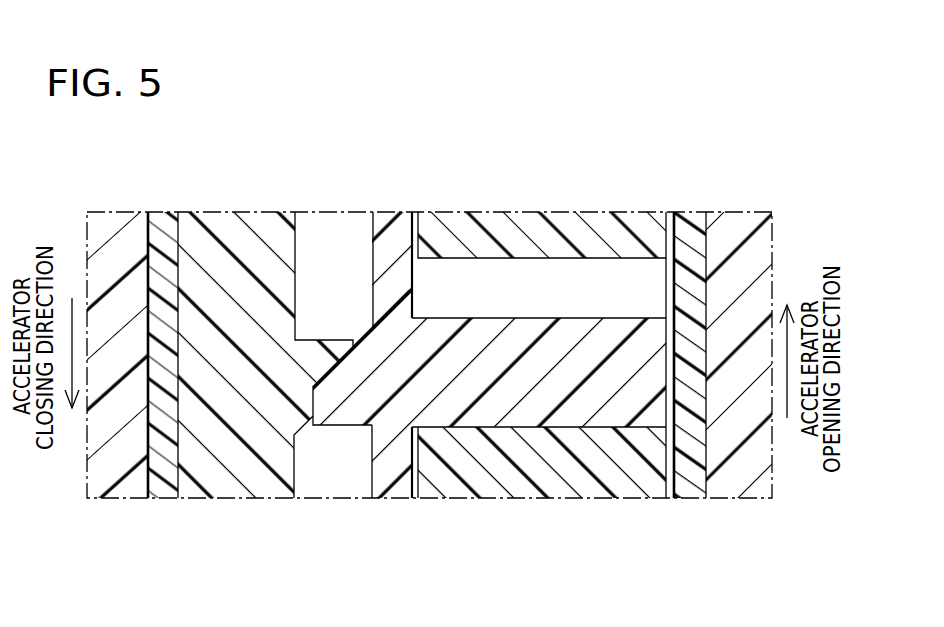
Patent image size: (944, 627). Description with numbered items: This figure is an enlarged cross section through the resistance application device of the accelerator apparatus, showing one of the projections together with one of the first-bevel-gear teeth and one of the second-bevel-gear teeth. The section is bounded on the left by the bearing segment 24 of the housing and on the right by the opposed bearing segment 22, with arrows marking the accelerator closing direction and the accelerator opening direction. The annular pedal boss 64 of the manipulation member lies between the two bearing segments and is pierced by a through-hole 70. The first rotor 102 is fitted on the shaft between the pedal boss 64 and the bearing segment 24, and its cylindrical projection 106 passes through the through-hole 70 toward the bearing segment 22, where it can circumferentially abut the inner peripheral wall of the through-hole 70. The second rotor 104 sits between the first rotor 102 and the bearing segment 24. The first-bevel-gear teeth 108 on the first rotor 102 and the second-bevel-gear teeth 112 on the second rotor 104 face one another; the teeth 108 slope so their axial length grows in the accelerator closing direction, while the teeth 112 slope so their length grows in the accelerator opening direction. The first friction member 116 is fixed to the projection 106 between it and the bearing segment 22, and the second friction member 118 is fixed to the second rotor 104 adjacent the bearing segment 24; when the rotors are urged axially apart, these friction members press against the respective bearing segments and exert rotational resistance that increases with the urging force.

The bearing segment 22 is at (736, 225).
The bearing segment 24 is at (112, 222).
The pedal boss 64 is at (556, 488).
The through-hole 70 is at (494, 258).
The first rotor 102 is at (400, 488).
The second rotor 104 is at (230, 488).
The projection 106 is at (570, 375).
The first-bevel-gear teeth 108 is at (341, 405).
The second-bevel-gear teeth 112 is at (322, 362).
The first friction member 116 is at (690, 488).
The second friction member 118 is at (158, 488).